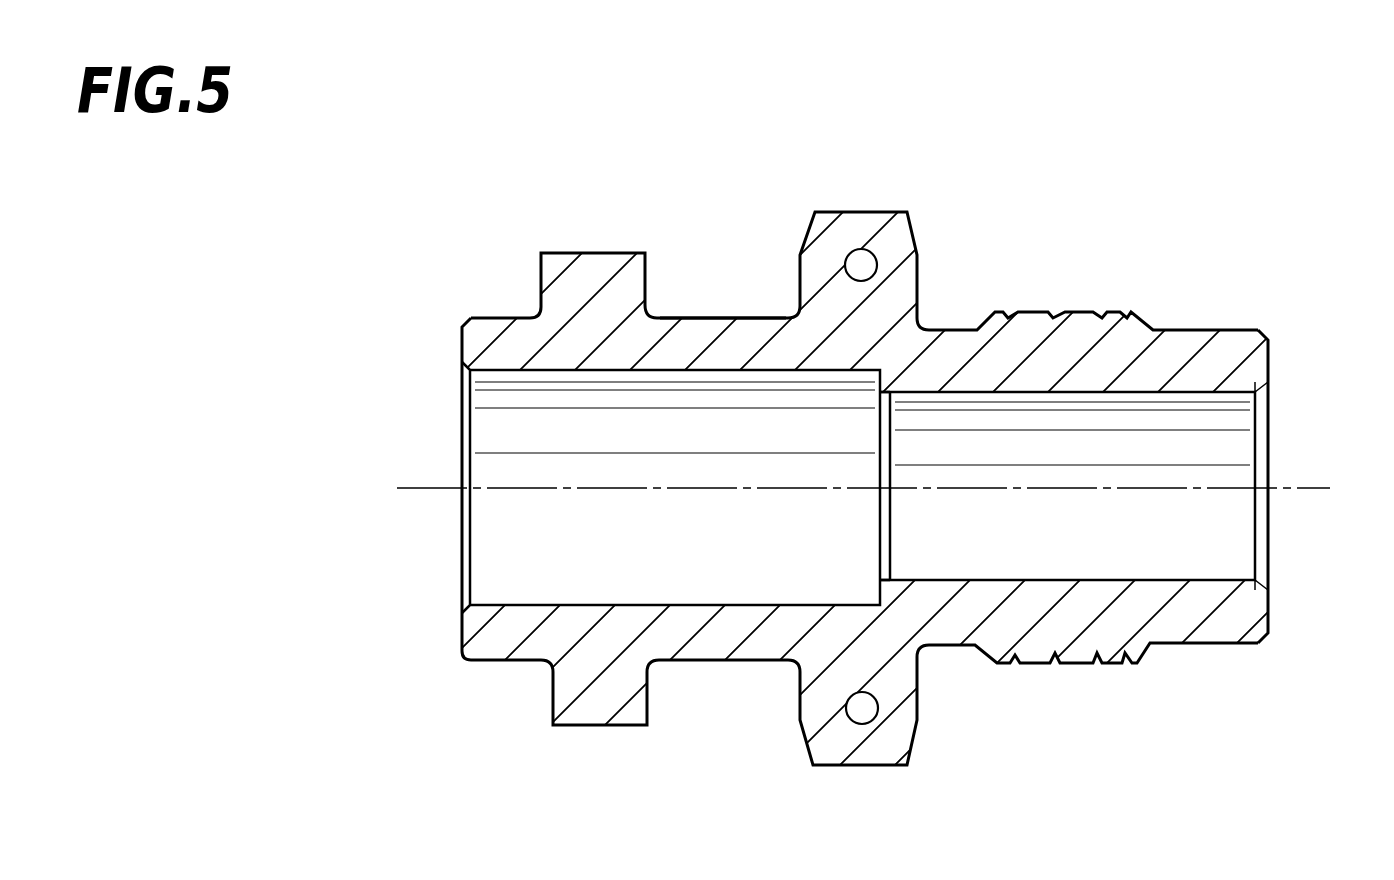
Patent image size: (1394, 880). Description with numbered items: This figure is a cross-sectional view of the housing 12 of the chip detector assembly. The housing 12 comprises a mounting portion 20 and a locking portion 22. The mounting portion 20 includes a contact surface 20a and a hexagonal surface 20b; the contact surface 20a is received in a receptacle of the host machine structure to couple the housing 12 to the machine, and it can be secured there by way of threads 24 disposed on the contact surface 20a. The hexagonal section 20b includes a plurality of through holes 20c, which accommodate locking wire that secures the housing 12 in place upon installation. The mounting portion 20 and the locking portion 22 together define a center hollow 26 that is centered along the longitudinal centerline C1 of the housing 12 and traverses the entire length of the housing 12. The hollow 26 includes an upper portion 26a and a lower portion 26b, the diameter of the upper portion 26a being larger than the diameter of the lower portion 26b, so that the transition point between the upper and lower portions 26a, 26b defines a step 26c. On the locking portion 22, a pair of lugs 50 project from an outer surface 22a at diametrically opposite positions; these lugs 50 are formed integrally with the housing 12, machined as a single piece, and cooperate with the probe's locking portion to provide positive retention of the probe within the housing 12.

The housing 12 is at (697, 446).
The mounting portion 20 is at (1087, 451).
The contact surface 20a is at (1072, 312).
The hexagonal surface 20b is at (840, 212).
The through holes 20c is at (1268, 390).
The locking portion 22 is at (597, 492).
The outer surface 22a is at (668, 318).
The threads 24 is at (1115, 665).
The center hollow 26 is at (911, 487).
The upper portion 26a is at (585, 531).
The lower portion 26b is at (1125, 539).
The step 26c is at (873, 381).
The lugs 50 is at (572, 251).
The longitudinal centerline C1 is at (412, 490).